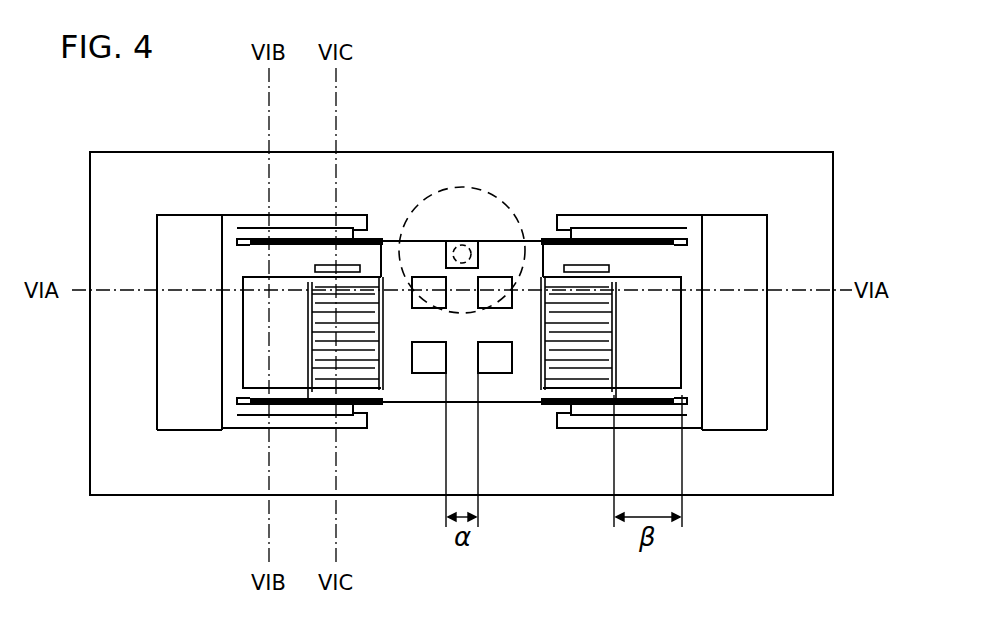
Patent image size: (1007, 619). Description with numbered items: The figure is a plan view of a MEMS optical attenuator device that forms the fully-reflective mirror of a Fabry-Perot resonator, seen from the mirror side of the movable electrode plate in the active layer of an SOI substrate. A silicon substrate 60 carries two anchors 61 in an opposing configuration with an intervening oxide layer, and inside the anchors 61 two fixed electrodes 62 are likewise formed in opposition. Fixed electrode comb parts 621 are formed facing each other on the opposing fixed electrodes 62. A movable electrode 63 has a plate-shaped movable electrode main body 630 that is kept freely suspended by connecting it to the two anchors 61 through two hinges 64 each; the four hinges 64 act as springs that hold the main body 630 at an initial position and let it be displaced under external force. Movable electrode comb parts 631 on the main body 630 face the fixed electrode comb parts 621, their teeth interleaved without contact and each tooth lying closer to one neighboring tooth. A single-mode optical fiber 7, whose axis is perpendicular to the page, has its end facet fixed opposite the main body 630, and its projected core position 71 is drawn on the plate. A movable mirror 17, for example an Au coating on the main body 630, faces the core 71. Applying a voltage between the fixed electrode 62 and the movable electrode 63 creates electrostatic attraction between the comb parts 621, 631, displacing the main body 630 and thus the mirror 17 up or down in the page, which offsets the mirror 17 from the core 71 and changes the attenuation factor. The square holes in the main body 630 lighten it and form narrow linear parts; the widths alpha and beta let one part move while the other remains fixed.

The silicon substrate 60 is at (763, 495).
The anchors 61 is at (163, 398).
The fixed electrodes 62 is at (248, 368).
The movable electrode 63 is at (383, 243).
The hinges 64 is at (268, 213).
The movable electrode main body 630 is at (413, 388).
The movable electrode comb parts 631 is at (584, 266).
The fixed electrode comb parts 621 is at (553, 388).
The movable mirror 17 is at (448, 255).
The projected core position 71 is at (466, 248).
The single-mode optical fiber 7 is at (512, 208).